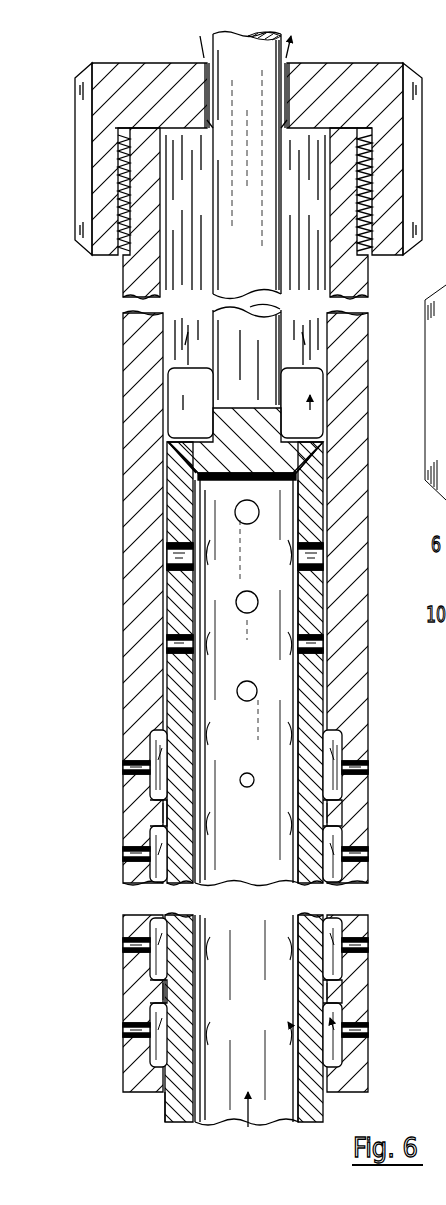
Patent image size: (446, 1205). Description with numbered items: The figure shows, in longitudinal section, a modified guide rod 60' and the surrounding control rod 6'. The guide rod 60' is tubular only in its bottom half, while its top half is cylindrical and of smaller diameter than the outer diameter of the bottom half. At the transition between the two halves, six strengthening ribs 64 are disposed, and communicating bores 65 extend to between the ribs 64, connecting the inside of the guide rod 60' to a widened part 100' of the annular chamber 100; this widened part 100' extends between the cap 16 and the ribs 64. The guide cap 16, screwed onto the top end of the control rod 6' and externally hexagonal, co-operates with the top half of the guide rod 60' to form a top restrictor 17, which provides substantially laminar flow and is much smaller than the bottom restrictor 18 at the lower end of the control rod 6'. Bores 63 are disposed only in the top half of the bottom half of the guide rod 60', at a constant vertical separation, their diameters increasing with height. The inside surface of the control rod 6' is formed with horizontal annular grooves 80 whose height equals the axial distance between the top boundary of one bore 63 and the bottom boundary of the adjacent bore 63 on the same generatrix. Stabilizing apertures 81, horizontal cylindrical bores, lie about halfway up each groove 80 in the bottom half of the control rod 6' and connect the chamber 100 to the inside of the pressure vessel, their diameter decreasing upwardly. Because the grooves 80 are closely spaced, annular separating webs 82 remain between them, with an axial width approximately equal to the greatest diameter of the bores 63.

The guide cap 16 is at (110, 237).
The top restrictor 17 is at (287, 58).
The bottom restrictor 18 is at (160, 1102).
The control rod 6' is at (218, 701).
The guide rod 60' is at (169, 284).
The bores 63 is at (239, 690).
The strengthening ribs 64 is at (177, 402).
The communicating bores 65 is at (173, 452).
The annular grooves 80 is at (343, 828).
The stabilizing apertures 81 is at (123, 948).
The annular separating webs 82 is at (165, 817).
The annular chamber 100 is at (297, 784).
The widened part of the annular chamber 100' is at (243, 213).